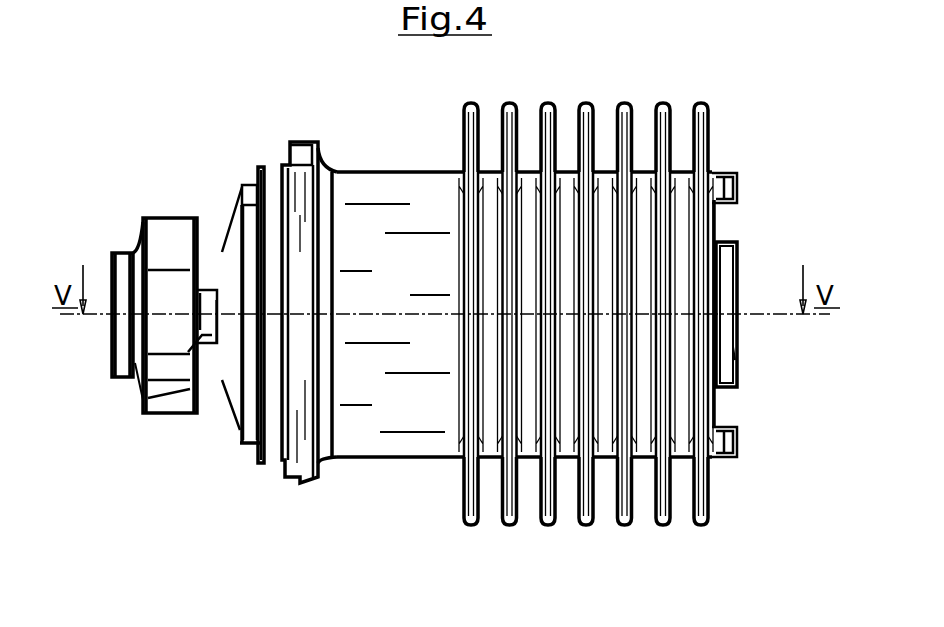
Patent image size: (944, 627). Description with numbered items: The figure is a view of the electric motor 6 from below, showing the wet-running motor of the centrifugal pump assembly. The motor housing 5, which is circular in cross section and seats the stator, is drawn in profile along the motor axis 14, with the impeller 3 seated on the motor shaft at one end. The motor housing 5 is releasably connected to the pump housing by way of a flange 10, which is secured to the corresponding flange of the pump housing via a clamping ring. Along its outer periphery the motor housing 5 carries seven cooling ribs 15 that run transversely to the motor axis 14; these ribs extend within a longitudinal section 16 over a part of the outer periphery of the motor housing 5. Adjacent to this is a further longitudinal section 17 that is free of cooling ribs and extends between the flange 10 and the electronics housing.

The impeller 3 is at (178, 402).
The flange 10 is at (300, 483).
The motor housing 5 is at (400, 306).
The electric motor 6 is at (546, 552).
The cooling ribs 15 is at (700, 530).
The motor axis 14 is at (757, 315).
The longitudinal section 16 is at (707, 60).
The longitudinal section free of cooling ribs 17 is at (457, 115).